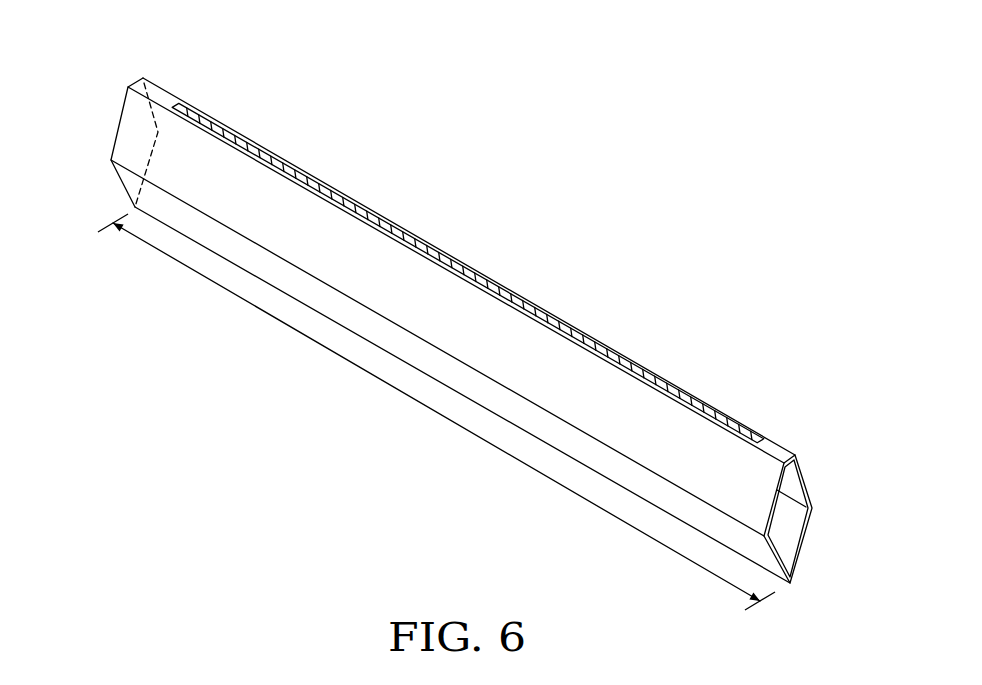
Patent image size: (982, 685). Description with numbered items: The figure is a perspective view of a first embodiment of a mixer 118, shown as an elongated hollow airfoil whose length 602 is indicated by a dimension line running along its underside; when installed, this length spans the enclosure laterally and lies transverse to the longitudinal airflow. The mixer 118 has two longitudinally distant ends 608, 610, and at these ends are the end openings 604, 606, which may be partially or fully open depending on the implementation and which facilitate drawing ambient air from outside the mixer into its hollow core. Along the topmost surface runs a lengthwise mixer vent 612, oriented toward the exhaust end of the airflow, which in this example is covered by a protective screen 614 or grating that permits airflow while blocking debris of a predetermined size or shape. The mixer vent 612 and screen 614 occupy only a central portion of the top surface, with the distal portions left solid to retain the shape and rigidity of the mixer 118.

The mixer 118 is at (99, 76).
The length 602 is at (434, 412).
The end opening 604 is at (788, 513).
The end opening 606 is at (143, 128).
The end 608 is at (818, 479).
The end 610 is at (90, 192).
The mixer vent 612 is at (182, 98).
The protective screen 614 is at (230, 135).